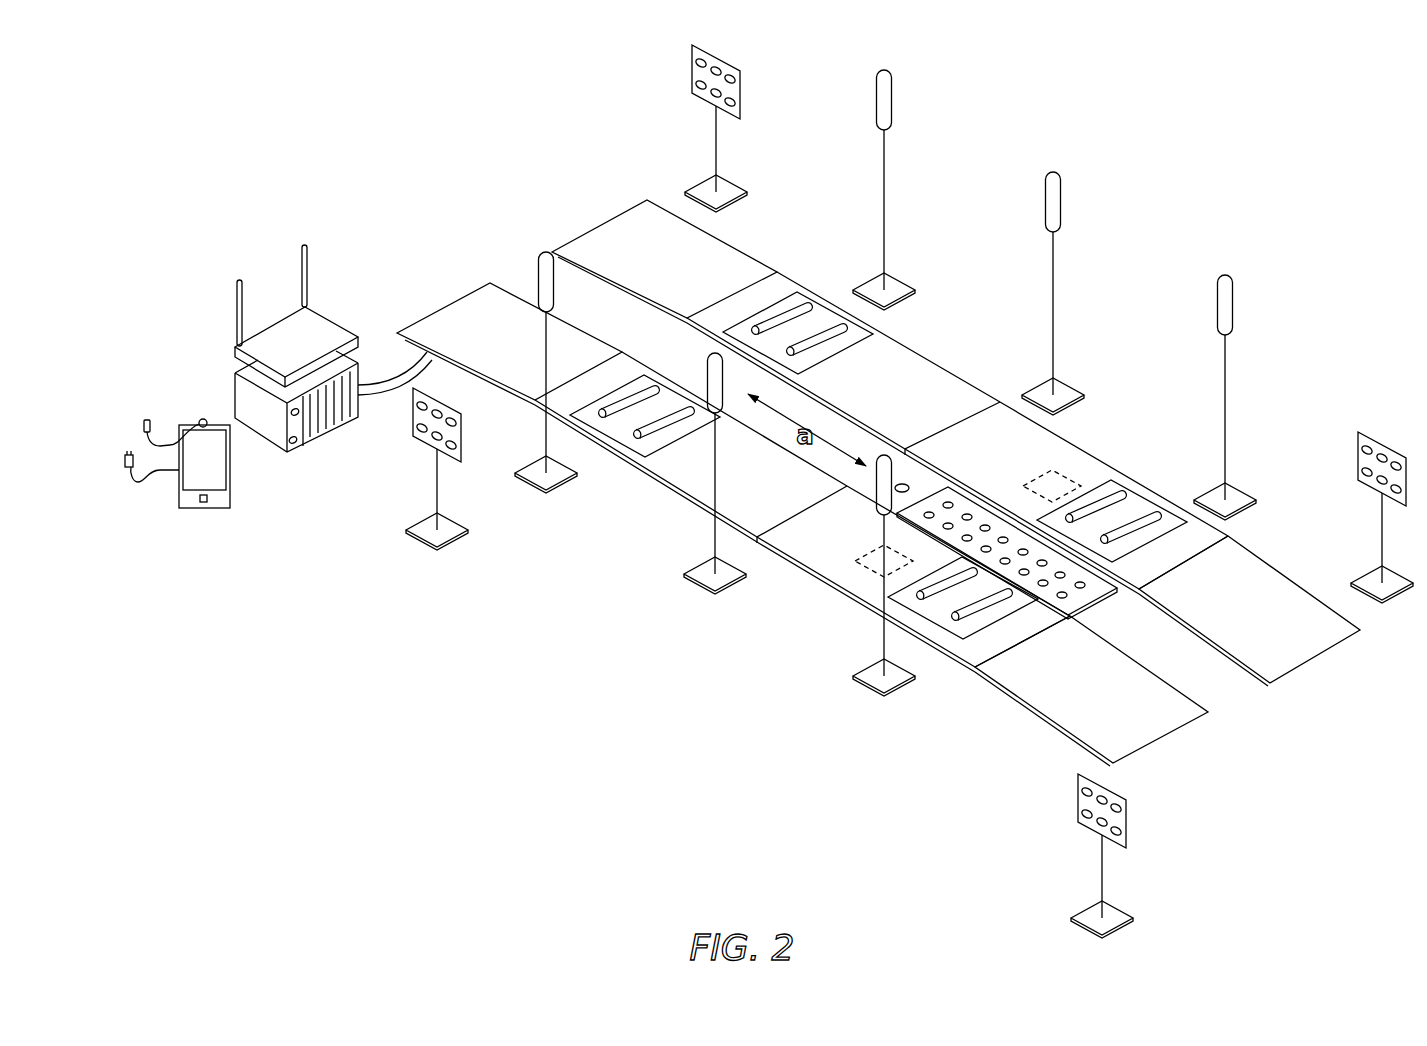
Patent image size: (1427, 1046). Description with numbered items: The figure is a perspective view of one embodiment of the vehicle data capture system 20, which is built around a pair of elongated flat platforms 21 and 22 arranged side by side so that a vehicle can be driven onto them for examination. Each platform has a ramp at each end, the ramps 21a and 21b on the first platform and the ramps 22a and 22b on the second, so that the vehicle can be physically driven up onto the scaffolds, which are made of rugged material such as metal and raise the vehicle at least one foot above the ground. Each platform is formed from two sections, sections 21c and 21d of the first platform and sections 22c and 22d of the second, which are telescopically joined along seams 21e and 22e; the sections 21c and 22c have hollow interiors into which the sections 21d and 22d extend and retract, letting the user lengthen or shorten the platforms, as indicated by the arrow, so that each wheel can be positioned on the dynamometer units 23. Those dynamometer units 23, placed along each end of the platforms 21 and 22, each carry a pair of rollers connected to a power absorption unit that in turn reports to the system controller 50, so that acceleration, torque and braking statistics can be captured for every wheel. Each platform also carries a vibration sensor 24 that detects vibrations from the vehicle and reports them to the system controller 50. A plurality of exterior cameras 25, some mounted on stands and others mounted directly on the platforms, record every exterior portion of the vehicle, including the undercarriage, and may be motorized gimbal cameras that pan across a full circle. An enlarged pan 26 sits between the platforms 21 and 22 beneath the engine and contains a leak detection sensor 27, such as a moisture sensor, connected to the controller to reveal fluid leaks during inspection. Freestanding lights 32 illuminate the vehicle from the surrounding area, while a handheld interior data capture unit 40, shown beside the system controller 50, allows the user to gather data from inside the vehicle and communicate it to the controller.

The vehicle data capture system 20 is at (378, 135).
The elongated flat platform 21 is at (640, 494).
The ramp 21a is at (477, 351).
The ramp 21b is at (1108, 712).
The section 21c is at (730, 482).
The section 21d is at (823, 543).
The seam 21e is at (788, 523).
The elongated flat platform 22 is at (921, 352).
The ramp 22a is at (657, 277).
The ramp 22b is at (1263, 629).
The section 22c is at (842, 395).
The section 22d is at (977, 463).
The seam 22e is at (965, 422).
The dynamometer unit 23 is at (619, 433).
The vibration sensor 24 is at (863, 570).
The exterior camera 25 is at (546, 440).
The enlarged pan 26 is at (1090, 598).
The leak detection sensor 27 is at (1062, 575).
The light 32 is at (716, 135).
The interior data capture unit 40 is at (186, 410).
The system controller 50 is at (268, 263).